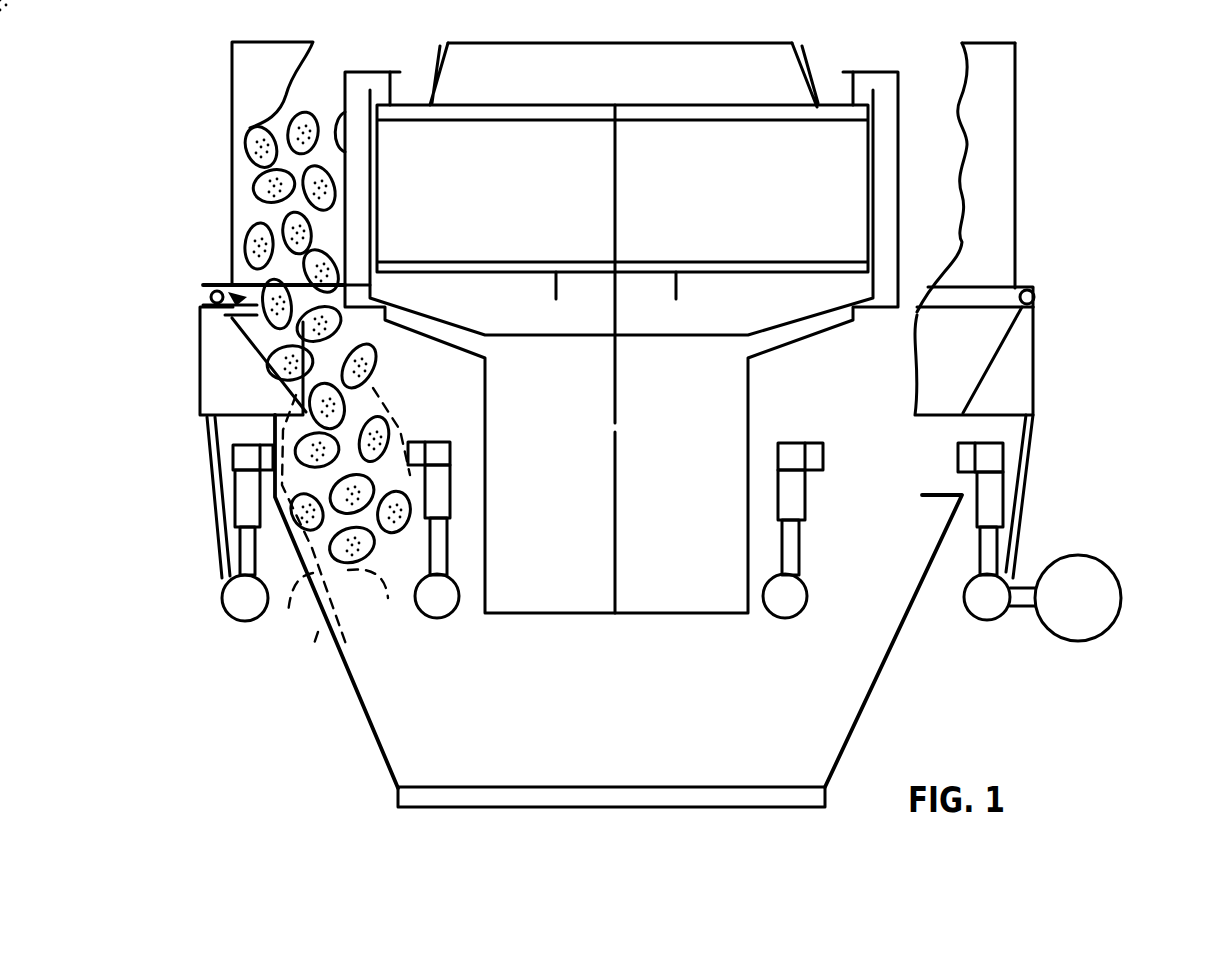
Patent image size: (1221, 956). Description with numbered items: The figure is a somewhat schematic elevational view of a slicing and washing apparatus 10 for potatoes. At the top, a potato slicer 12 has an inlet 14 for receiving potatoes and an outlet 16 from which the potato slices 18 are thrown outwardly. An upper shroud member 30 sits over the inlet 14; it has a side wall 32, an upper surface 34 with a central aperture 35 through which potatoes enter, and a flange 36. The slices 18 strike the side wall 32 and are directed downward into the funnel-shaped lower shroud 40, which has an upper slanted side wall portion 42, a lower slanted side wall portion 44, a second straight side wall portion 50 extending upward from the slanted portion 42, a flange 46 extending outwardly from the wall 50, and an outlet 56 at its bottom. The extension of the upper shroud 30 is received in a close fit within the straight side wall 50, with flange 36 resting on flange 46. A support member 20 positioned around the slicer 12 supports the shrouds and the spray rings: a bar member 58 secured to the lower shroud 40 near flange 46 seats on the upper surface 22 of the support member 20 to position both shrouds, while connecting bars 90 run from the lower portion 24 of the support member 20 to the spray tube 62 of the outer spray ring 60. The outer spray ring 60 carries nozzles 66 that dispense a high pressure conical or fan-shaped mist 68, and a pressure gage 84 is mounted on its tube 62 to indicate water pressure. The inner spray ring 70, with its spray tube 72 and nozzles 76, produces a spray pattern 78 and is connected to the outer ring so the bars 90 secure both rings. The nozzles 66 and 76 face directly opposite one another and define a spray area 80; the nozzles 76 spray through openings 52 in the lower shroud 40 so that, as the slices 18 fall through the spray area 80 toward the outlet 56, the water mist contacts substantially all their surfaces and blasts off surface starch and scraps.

The slicing and washing apparatus 10 is at (1112, 84).
The potato slicer 12 is at (434, 128).
The inlet 14 is at (624, 88).
The outlet 16 is at (362, 120).
The potato slices 18 is at (250, 143).
The support member 20 is at (1020, 360).
The upper surface 22 is at (202, 298).
The lower portion 24 is at (203, 396).
The upper shroud member 30 is at (1035, 135).
The side wall 32 is at (1018, 170).
The upper surface 34 is at (995, 45).
The central aperture 35 is at (936, 58).
The flange 36 is at (1035, 292).
The lower shroud member 40 is at (350, 694).
The upper slanted side wall portion 42 is at (985, 380).
The lower slanted side wall portion 44 is at (885, 668).
The flange 46 is at (1000, 310).
The second straight side wall portion 50 is at (238, 331).
The openings 52 is at (947, 483).
The outlet 56 is at (425, 807).
The bar member 58 is at (1035, 297).
The outer spray ring 60 is at (200, 602).
The spray tube 62 is at (240, 612).
The nozzles 66 is at (240, 458).
The mist 68 is at (307, 522).
The inner spray ring 70 is at (432, 645).
The spray tube 72 is at (452, 607).
The nozzles 76 is at (432, 445).
The spray pattern 78 is at (379, 506).
The spray area 80 is at (322, 522).
The pressure gage 84 is at (1115, 590).
The connecting bars 90 is at (207, 440).